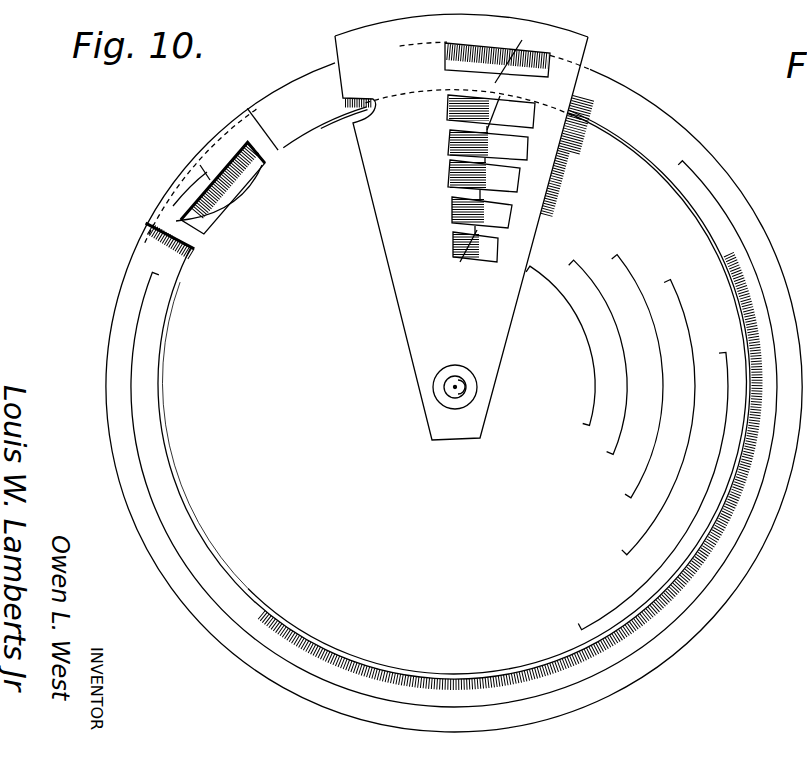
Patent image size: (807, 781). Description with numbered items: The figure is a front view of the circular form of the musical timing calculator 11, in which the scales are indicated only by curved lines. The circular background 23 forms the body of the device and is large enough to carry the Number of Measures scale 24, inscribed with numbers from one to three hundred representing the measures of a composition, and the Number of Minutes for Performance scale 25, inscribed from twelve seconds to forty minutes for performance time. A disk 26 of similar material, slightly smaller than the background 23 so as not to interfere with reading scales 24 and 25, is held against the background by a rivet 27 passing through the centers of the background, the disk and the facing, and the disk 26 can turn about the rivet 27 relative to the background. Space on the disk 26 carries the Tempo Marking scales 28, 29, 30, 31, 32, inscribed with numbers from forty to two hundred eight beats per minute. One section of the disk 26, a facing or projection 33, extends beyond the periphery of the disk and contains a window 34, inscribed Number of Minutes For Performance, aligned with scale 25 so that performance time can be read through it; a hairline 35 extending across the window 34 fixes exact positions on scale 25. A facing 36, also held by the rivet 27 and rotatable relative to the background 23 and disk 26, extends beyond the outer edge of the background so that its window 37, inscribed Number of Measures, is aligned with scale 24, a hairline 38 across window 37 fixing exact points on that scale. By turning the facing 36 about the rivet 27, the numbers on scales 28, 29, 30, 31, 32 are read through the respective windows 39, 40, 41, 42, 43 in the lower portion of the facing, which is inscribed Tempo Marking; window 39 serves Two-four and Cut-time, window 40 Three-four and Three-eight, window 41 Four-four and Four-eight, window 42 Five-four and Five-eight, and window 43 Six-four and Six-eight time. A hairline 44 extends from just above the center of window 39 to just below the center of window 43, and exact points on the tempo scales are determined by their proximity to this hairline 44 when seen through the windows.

The musical timing calculator device 11 is at (104, 219).
The circular background 23 is at (113, 434).
The Number of Measures scale 24 is at (133, 316).
The Number of Minutes for Performance scale 25 is at (380, 681).
The disk 26 is at (175, 390).
The rivet 27 is at (458, 382).
The Tempo Marking scale 28 is at (724, 366).
The Tempo Marking scale 29 is at (686, 327).
The Tempo Marking scale 30 is at (633, 289).
The Tempo Marking scale 31 is at (605, 310).
The Tempo Marking scale 32 is at (580, 338).
The facing or projection 33 is at (200, 165).
The window 34 is at (258, 150).
The hairline 35 is at (186, 215).
The facing 36 is at (408, 298).
The window 37 is at (481, 40).
The hairline 38 is at (498, 43).
The window 39 is at (491, 111).
The window 40 is at (488, 145).
The window 41 is at (484, 176).
The window 42 is at (482, 212).
The window 43 is at (475, 247).
The hairline 44 is at (495, 86).